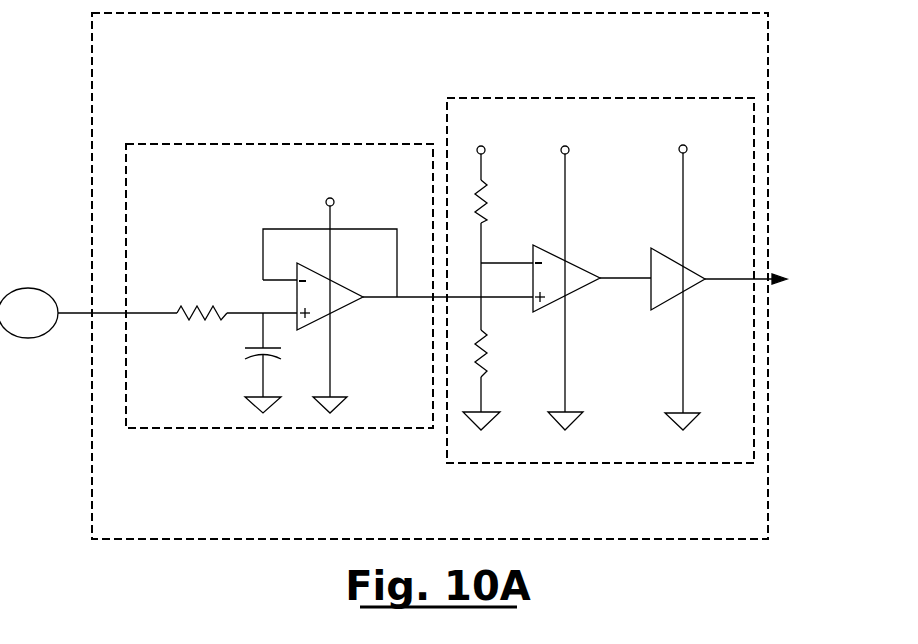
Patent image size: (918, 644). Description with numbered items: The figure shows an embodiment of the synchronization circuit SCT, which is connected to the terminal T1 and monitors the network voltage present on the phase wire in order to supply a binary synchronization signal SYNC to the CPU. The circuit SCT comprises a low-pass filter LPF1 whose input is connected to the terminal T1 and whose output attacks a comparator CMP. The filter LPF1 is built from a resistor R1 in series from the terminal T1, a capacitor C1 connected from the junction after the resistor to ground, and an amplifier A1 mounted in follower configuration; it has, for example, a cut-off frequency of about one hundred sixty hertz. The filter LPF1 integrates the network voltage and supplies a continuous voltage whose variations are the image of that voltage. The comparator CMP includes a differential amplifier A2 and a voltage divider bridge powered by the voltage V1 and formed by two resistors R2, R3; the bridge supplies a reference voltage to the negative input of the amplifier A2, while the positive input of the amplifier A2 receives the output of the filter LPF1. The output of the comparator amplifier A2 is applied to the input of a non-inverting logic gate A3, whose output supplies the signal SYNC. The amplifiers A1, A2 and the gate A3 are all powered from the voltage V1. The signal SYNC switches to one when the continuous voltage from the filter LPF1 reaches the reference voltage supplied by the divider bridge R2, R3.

The synchronization circuit SCT is at (317, 66).
The low-pass filter LPF1 is at (230, 184).
The comparator CMP is at (645, 138).
The terminal T1 is at (88, 313).
The resistor R1 is at (237, 300).
The capacitor C1 is at (245, 363).
The amplifier A1 is at (398, 309).
The voltage V1 is at (506, 163).
The resistor R2 is at (504, 242).
The resistor R3 is at (491, 380).
The differential amplifier A2 is at (592, 292).
The non-inverting logic gate A3 is at (678, 291).
The synchronization signal SYNC is at (778, 279).